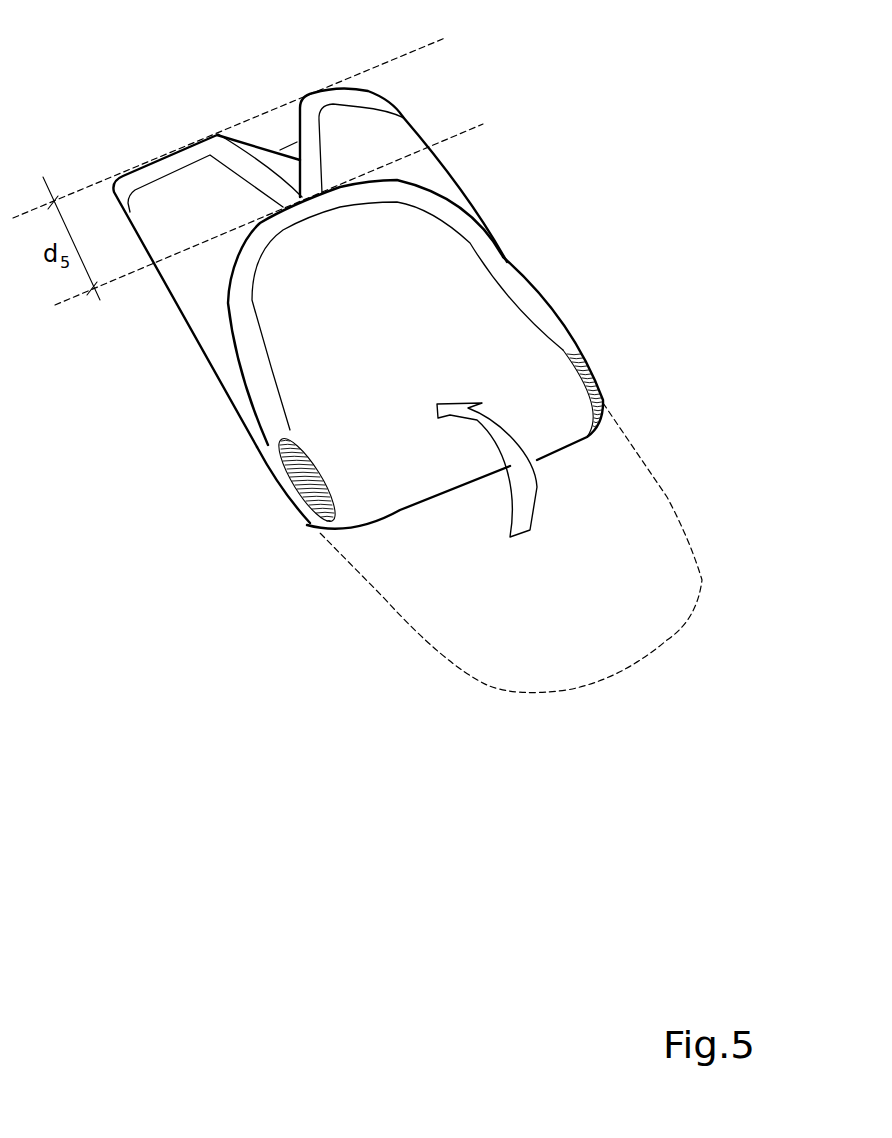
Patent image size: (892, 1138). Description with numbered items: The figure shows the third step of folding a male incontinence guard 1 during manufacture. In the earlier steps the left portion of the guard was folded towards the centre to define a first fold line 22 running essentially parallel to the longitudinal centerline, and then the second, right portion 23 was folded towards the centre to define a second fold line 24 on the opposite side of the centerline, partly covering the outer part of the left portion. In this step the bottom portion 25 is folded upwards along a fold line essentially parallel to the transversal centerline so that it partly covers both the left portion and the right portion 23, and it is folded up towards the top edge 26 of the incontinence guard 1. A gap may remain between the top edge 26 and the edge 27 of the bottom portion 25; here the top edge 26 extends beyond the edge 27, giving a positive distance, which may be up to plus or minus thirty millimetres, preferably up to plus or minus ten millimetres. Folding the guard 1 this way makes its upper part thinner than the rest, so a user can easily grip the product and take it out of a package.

The incontinence guard 1 is at (602, 260).
The first fold line 22 is at (253, 447).
The second portion 23 is at (353, 117).
The second fold line 24 is at (458, 187).
The bottom portion 25 is at (497, 300).
The top edge 26 is at (165, 152).
The edge of the bottom portion 27 is at (217, 133).